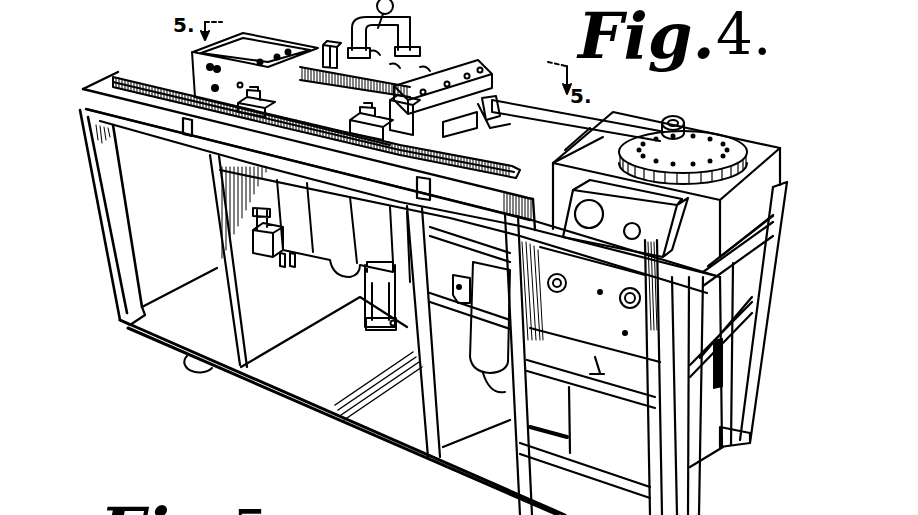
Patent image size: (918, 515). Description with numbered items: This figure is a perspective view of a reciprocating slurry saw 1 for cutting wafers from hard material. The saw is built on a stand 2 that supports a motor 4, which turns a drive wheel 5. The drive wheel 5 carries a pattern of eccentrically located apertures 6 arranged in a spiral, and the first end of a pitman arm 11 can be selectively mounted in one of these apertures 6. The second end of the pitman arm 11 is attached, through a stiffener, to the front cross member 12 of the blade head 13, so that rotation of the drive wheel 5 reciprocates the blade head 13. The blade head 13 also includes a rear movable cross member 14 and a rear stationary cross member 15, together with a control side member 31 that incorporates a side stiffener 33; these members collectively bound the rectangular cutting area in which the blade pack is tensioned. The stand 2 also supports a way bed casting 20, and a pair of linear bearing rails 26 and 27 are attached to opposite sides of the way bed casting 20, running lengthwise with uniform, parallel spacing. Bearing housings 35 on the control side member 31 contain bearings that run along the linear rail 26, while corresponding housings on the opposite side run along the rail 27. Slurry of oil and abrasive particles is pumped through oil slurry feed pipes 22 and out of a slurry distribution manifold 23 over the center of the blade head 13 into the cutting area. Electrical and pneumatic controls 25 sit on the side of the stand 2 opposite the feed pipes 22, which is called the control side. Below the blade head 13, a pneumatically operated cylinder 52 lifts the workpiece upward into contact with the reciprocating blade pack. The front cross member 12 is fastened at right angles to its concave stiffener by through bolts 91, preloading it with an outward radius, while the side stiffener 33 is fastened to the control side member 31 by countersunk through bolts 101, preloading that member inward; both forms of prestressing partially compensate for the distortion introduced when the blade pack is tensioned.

The reciprocating slurry saw 1 is at (522, 49).
The stand 2 is at (232, 362).
The motor 4 is at (487, 375).
The drive wheel 5 is at (737, 163).
The eccentrically located apertures 6 is at (707, 138).
The pitman arm 11 is at (618, 118).
The front cross member 12 is at (492, 90).
The blade head 13 is at (227, 74).
The rear movable cross member 14 is at (328, 40).
The rear stationary cross member 15 is at (257, 40).
The way bed casting 20 is at (97, 102).
The oil slurry feed pipes 22 is at (418, 33).
The slurry distribution manifold 23 is at (348, 43).
The electrical and pneumatic controls 25 is at (664, 247).
The linear bearing rail 26 is at (127, 74).
The linear bearing rail 27 is at (577, 128).
The control side member 31 is at (193, 55).
The side stiffener 33 is at (340, 118).
The bearing housings 35 is at (248, 112).
The pneumatically operated cylinder 52 is at (370, 314).
The through bolts 91 is at (499, 126).
The countersunk through bolts 101 is at (378, 55).